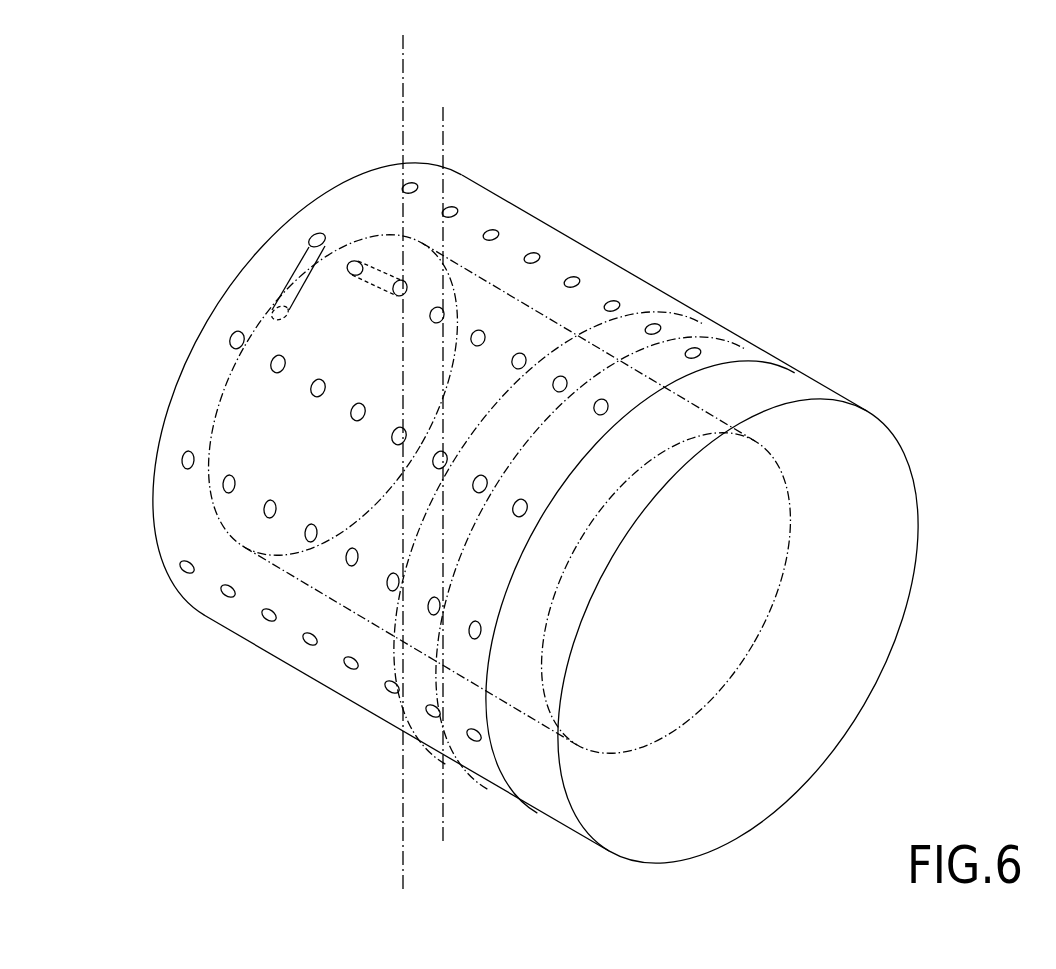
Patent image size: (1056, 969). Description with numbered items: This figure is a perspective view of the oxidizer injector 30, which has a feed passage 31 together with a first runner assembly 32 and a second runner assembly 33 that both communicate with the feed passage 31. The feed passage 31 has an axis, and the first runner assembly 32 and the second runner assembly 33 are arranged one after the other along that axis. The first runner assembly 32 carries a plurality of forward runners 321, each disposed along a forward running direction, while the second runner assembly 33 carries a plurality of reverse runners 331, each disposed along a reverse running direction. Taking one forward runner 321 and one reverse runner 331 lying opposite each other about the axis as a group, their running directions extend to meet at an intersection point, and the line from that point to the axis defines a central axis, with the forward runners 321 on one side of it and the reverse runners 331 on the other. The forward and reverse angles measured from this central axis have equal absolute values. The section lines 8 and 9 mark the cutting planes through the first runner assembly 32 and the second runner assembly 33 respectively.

The oxidizer injector 30 is at (598, 244).
The feed passage 31 is at (768, 495).
The first runner assembly 32 is at (745, 351).
The forward runner 321 is at (698, 348).
The second runner assembly 33 is at (693, 314).
The reverse runner 331 is at (657, 324).
The section line 8- 8 is at (426, 63).
The section line 9- 9 is at (498, 148).